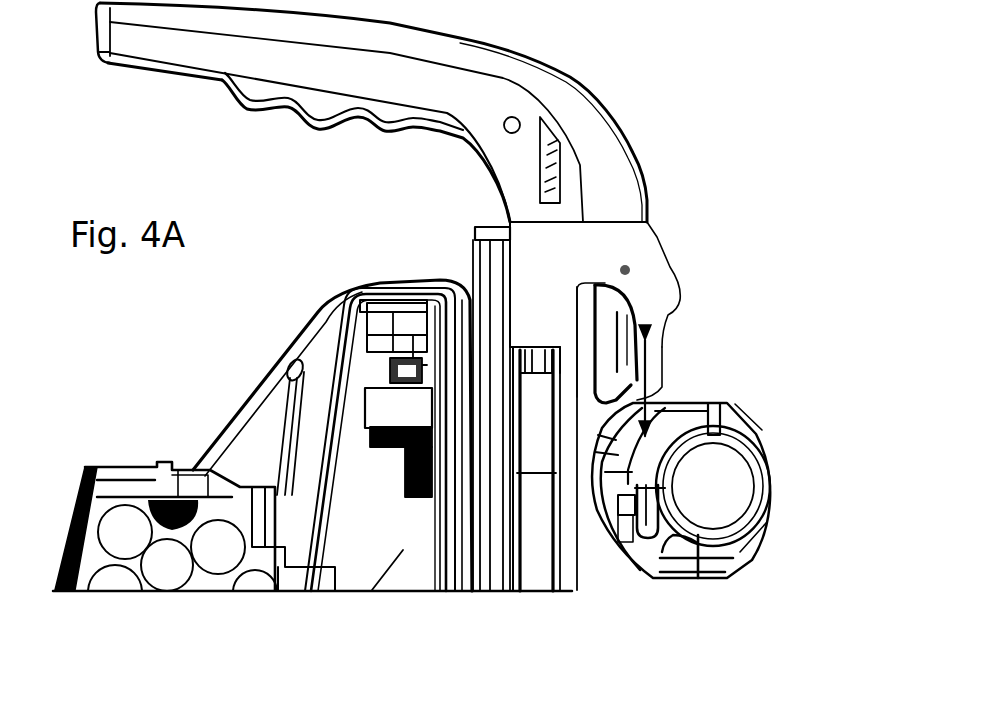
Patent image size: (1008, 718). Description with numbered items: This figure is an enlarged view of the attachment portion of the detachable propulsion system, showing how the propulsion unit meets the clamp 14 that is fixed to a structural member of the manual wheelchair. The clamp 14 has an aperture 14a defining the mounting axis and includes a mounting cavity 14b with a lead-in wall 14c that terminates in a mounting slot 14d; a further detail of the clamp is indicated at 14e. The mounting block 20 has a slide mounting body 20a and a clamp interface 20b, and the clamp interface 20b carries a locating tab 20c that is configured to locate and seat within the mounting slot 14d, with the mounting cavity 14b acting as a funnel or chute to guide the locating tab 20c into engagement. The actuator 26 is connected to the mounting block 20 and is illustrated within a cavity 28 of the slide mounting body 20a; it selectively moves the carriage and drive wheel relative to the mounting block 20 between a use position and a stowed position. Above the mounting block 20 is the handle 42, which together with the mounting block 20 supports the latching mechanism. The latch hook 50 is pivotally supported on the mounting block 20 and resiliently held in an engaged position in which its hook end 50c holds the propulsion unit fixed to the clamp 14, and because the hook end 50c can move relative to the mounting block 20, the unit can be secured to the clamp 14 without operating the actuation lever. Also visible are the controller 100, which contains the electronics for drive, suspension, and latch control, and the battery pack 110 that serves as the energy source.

The clamp 14 is at (729, 501).
The aperture 14a is at (733, 490).
The mounting cavity 14b is at (685, 425).
The lead-in wall 14c is at (610, 437).
The mounting slot 14d is at (627, 513).
The hook 14e is at (627, 505).
The mounting block 20 is at (618, 406).
The slide mounting body 20a is at (563, 590).
The clamp interface 20b is at (660, 274).
The locating tab 20c is at (660, 352).
The actuator 26 is at (537, 575).
The cavity 28 is at (540, 528).
The handle 42 is at (158, 106).
The latch hook 50 is at (609, 324).
The hook end 50c is at (617, 380).
The controller 100 is at (386, 468).
The battery pack 110 is at (135, 457).